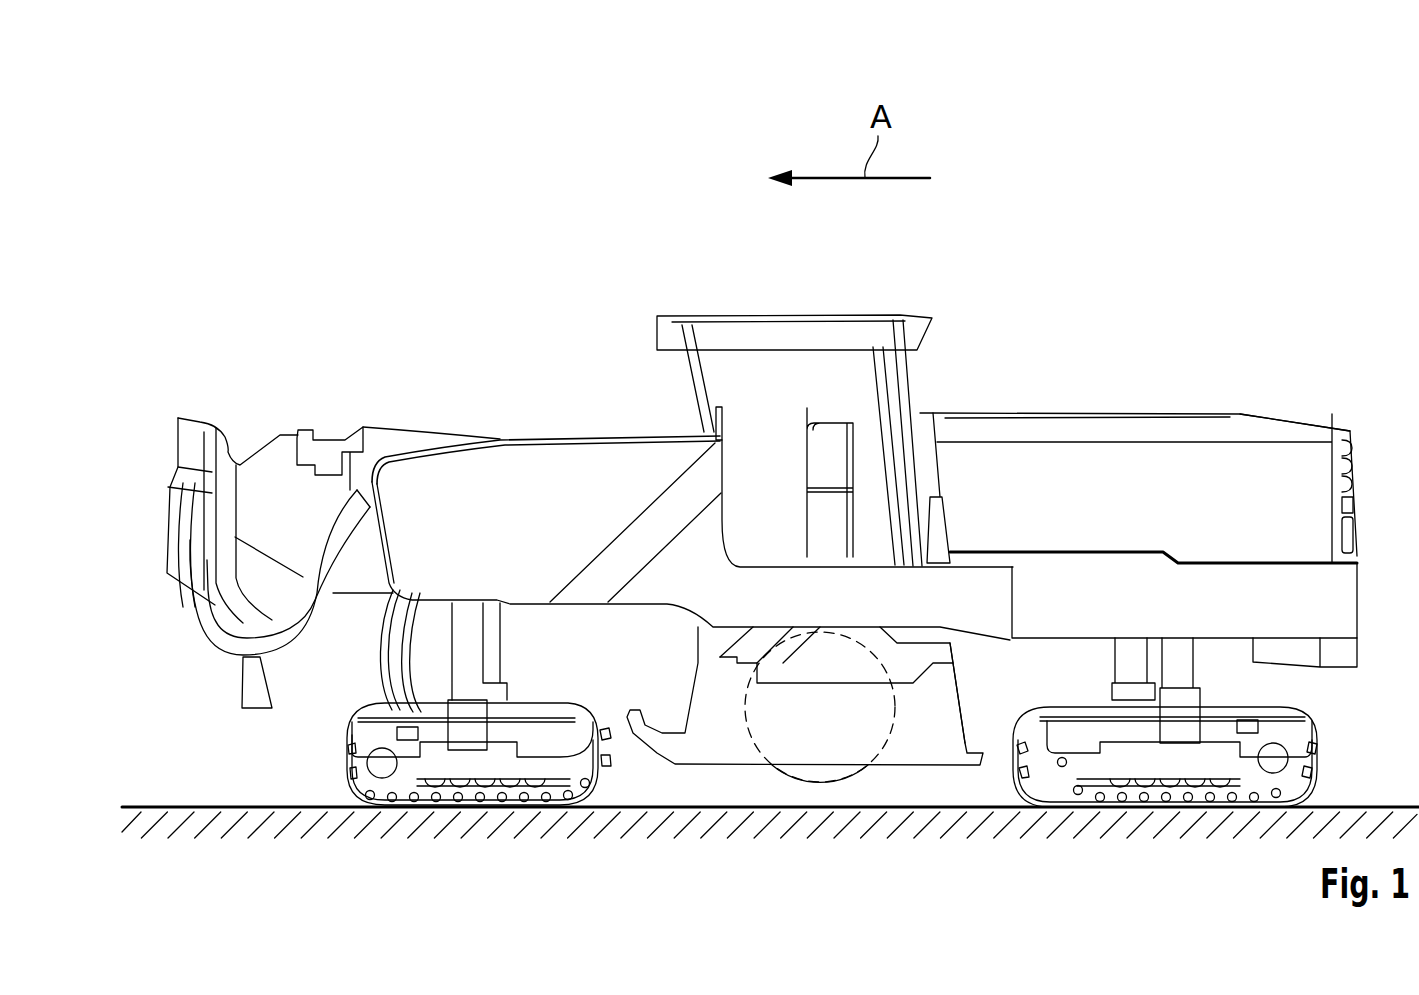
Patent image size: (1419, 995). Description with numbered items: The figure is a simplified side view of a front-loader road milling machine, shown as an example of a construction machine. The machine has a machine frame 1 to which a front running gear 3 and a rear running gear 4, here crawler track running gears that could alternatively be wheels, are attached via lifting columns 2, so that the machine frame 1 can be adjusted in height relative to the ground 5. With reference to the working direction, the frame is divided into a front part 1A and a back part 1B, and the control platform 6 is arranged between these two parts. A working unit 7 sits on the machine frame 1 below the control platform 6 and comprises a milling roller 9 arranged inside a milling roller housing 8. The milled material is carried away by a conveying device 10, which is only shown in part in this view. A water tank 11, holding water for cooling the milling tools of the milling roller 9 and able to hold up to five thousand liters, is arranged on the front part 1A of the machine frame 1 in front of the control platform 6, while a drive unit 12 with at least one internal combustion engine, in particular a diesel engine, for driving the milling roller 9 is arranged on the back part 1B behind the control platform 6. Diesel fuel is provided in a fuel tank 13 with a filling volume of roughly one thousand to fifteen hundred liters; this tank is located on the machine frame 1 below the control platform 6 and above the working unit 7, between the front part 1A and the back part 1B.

The machine frame 1 is at (1015, 385).
The front part of the machine frame 1A is at (440, 482).
The back part of the machine frame 1B is at (1222, 458).
The lifting columns 2 is at (478, 664).
The front running gear 3 is at (320, 757).
The rear running gear 4 is at (1348, 749).
The ground 5 is at (186, 806).
The control platform 6 is at (832, 297).
The working unit 7 is at (775, 795).
The milling roller housing 8 is at (965, 718).
The milling roller 9 is at (818, 784).
The conveying device 10 is at (269, 459).
The water tank 11 is at (558, 515).
The drive unit 12 is at (1105, 490).
The fuel tank 13 is at (776, 592).